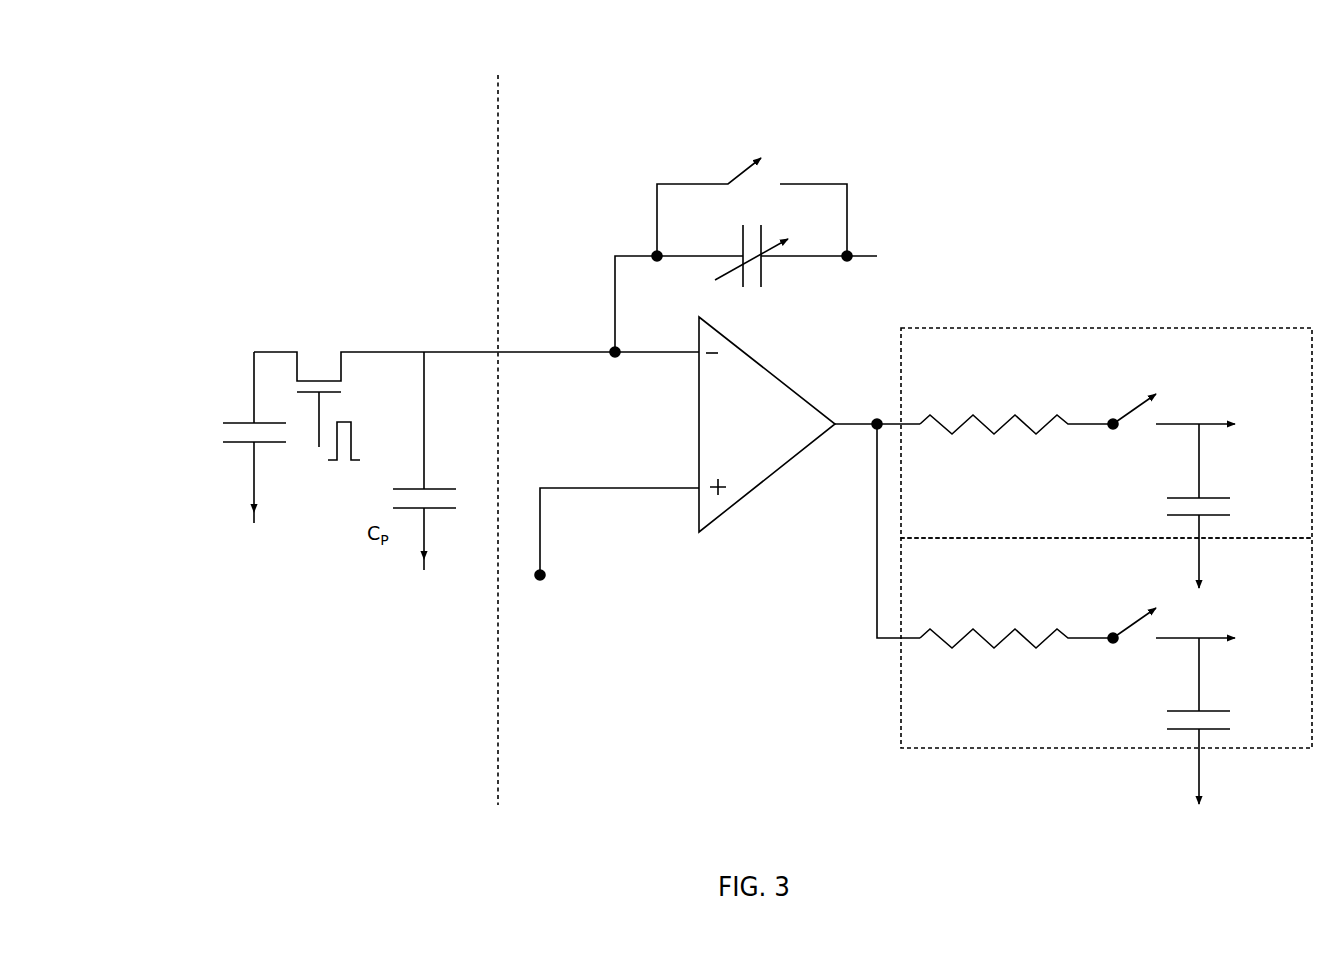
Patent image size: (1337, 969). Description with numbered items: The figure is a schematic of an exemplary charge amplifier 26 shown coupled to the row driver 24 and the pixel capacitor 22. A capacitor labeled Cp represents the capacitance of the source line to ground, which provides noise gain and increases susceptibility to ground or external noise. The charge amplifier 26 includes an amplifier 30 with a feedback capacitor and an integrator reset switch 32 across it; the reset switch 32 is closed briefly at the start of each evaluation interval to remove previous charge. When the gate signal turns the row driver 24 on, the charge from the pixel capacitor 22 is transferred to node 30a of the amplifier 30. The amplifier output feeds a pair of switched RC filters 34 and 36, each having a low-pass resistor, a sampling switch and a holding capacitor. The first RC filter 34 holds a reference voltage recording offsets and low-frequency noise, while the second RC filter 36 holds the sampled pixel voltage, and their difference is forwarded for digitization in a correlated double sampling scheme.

The pixel capacitor 22 is at (238, 423).
The row driver 24 is at (269, 494).
The charge amplifier 26 is at (1036, 118).
The amplifier 30 is at (699, 420).
The node 30a is at (762, 276).
The integrator reset switch 32 is at (722, 136).
The first RC filter 34 is at (1263, 327).
The second RC filter 36 is at (1270, 750).